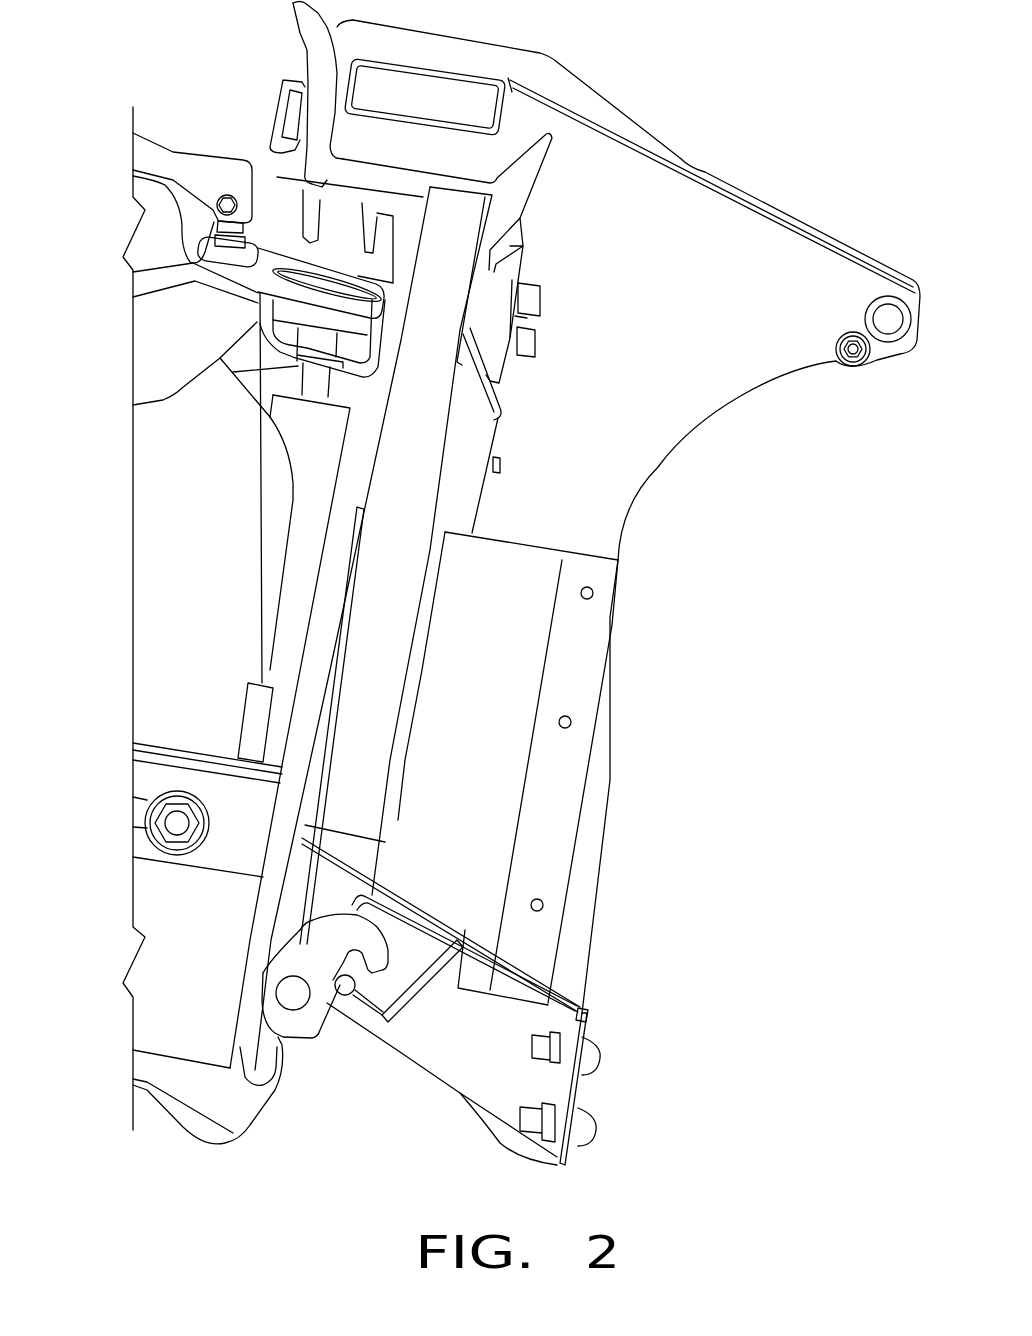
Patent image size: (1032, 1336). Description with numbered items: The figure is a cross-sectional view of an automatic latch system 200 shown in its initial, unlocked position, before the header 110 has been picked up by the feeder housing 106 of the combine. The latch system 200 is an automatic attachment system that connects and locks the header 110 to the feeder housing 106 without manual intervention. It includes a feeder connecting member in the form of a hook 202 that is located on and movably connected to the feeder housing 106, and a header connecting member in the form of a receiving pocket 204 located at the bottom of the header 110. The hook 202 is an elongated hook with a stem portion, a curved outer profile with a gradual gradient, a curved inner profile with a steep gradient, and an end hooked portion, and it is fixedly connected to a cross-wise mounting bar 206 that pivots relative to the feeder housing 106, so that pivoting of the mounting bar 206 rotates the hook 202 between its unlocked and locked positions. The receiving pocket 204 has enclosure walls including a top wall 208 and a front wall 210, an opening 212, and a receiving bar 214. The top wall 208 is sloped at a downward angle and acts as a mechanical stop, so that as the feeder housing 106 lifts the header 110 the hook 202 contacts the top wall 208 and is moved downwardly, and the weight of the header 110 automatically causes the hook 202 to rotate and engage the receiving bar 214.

The feeder housing 106 is at (215, 163).
The header 110 is at (760, 198).
The latch system 200 is at (118, 1025).
The hook 202 is at (300, 960).
The receiving pocket 204 is at (444, 903).
The mounting bar 206 is at (273, 993).
The top wall 208 is at (375, 878).
The front wall 210 is at (420, 987).
The opening 212 is at (333, 1050).
The receiving bar 214 is at (347, 995).